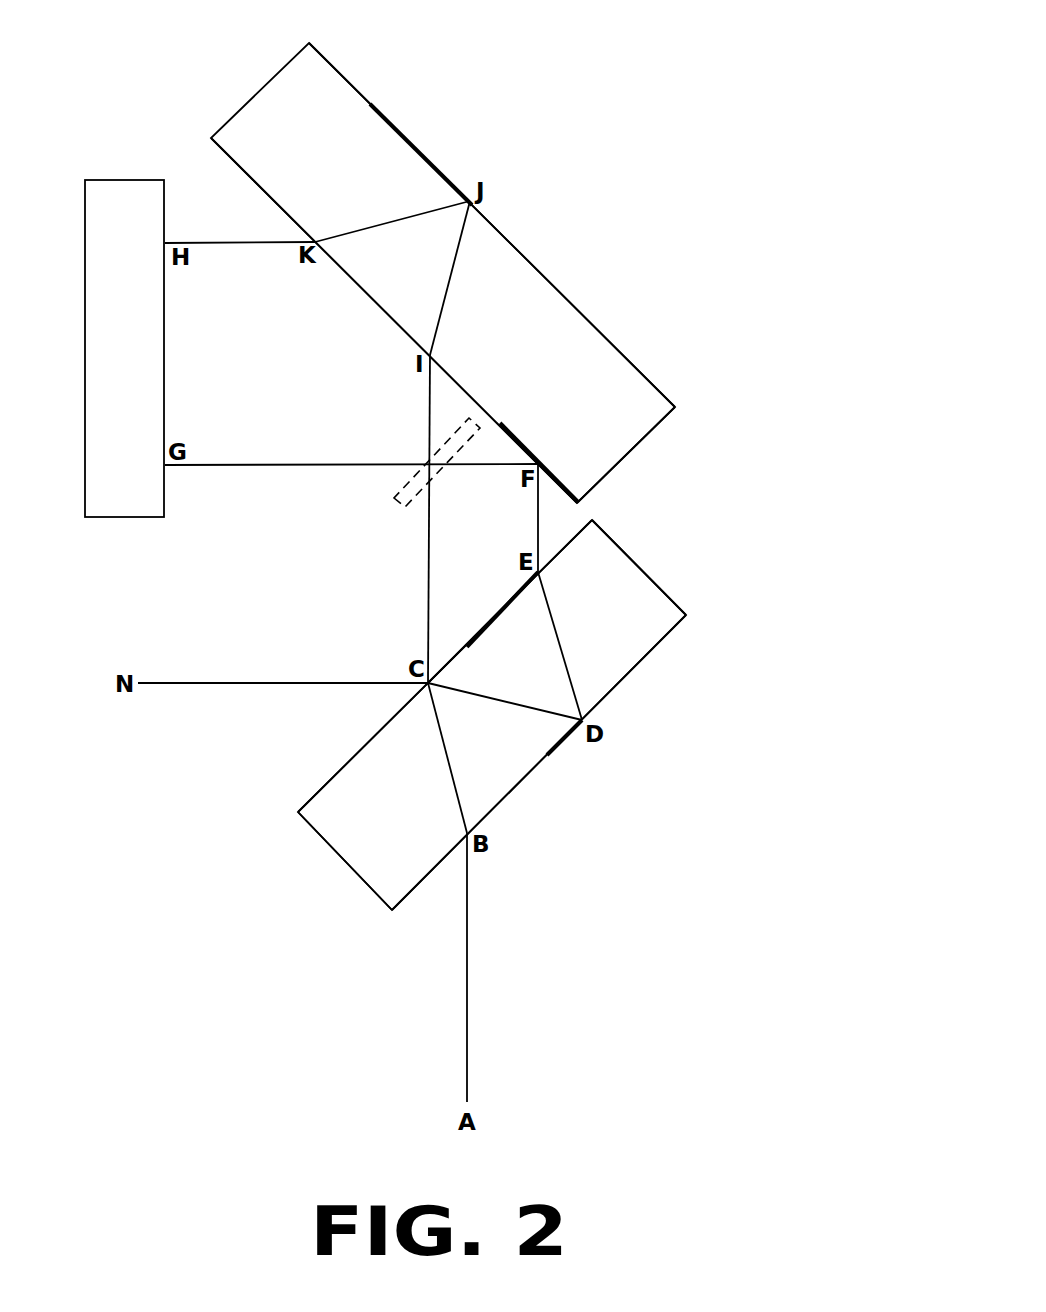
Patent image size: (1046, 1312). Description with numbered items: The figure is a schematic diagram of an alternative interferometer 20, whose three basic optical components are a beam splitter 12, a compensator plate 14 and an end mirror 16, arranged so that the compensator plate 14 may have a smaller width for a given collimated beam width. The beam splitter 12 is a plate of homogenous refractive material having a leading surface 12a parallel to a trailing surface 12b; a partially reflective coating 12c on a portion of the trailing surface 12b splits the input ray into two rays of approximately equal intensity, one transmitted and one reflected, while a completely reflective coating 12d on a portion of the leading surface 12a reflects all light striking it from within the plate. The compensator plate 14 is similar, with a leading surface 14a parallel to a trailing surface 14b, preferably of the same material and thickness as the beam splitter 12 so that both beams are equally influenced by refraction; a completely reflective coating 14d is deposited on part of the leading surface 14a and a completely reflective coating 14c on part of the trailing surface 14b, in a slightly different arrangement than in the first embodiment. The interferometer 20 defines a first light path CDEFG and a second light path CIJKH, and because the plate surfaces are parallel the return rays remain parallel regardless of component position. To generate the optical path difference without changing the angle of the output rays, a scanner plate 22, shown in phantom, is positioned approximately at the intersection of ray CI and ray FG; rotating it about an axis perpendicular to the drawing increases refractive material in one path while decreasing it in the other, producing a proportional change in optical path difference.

The beam splitter 12 is at (660, 558).
The leading surface 12a is at (677, 628).
The trailing surface 12b is at (307, 800).
The partially reflective coating 12c is at (390, 718).
The completely reflective coating 12d is at (607, 698).
The compensator plate 14 is at (660, 466).
The leading surface 14a is at (337, 265).
The trailing surface 14b is at (623, 352).
The completely reflective coating 14c is at (498, 230).
The completely reflective coating 14d is at (558, 438).
The end mirror 16 is at (122, 150).
The interferometer 20 is at (698, 92).
The scanner plate 22 is at (372, 522).